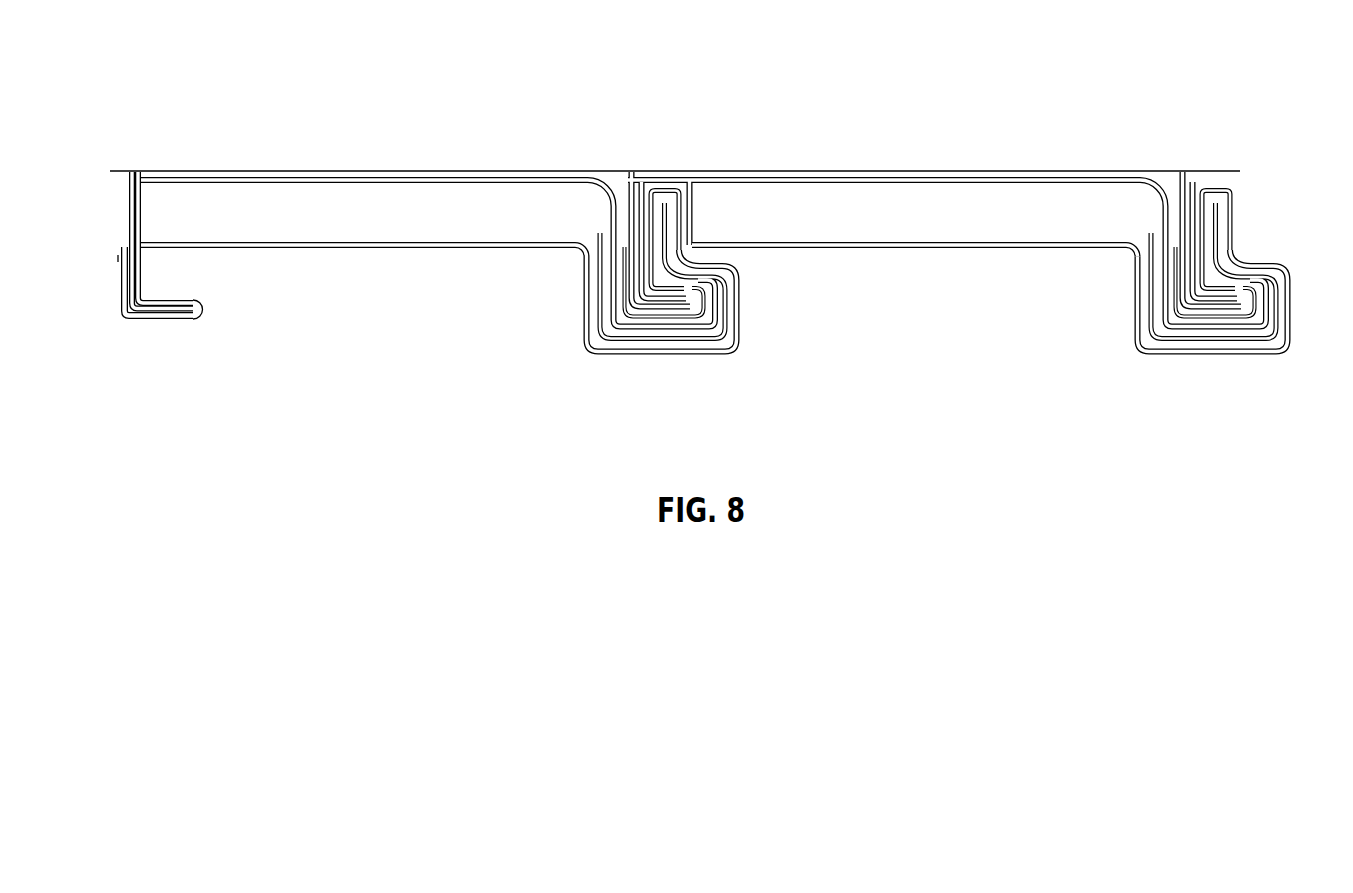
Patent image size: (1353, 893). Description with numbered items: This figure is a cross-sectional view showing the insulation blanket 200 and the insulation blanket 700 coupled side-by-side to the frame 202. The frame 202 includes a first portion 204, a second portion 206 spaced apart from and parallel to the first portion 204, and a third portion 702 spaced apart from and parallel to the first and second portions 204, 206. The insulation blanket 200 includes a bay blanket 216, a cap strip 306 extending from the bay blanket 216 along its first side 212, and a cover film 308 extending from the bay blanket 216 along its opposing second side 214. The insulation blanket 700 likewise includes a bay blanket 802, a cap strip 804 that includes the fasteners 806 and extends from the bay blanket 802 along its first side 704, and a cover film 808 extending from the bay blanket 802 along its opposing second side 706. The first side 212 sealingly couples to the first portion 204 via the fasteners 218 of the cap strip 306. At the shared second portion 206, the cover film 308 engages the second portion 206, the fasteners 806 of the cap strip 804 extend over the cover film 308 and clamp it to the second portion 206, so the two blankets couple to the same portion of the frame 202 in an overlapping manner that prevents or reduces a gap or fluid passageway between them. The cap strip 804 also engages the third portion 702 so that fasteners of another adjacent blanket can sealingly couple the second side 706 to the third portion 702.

The insulation blanket 200 is at (864, 140).
The frame 202 is at (106, 262).
The first portion 204 is at (1178, 293).
The second portion 206 is at (663, 317).
The first side 212 is at (1234, 152).
The second side 214 is at (669, 155).
The bay blanket 216 is at (935, 243).
The fasteners 218 is at (1243, 273).
The cap strip 306 is at (1228, 358).
The cover film 308 is at (712, 305).
The insulation blanket 700 is at (446, 158).
The third portion 702 is at (165, 322).
The first side 704 is at (608, 153).
The second side 706 is at (137, 157).
The bay blanket 802 is at (405, 243).
The cap strip 804 is at (622, 360).
The fasteners 806 is at (600, 327).
The cover film 808 is at (200, 310).